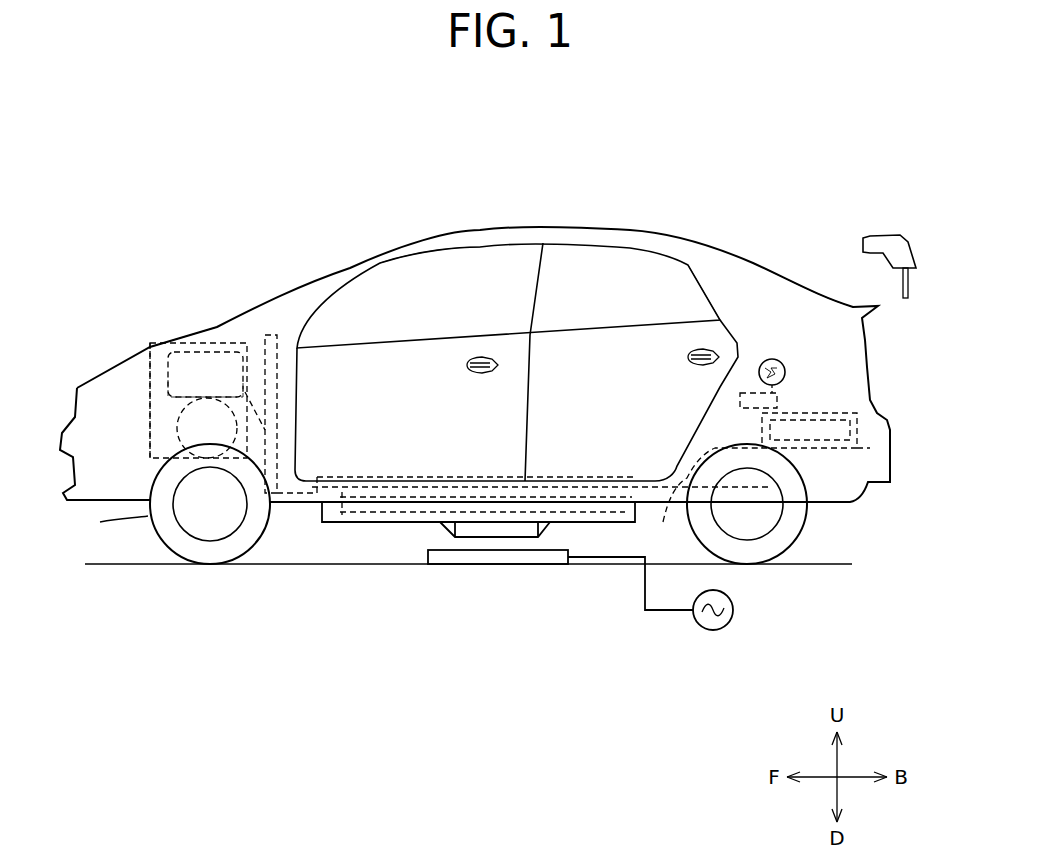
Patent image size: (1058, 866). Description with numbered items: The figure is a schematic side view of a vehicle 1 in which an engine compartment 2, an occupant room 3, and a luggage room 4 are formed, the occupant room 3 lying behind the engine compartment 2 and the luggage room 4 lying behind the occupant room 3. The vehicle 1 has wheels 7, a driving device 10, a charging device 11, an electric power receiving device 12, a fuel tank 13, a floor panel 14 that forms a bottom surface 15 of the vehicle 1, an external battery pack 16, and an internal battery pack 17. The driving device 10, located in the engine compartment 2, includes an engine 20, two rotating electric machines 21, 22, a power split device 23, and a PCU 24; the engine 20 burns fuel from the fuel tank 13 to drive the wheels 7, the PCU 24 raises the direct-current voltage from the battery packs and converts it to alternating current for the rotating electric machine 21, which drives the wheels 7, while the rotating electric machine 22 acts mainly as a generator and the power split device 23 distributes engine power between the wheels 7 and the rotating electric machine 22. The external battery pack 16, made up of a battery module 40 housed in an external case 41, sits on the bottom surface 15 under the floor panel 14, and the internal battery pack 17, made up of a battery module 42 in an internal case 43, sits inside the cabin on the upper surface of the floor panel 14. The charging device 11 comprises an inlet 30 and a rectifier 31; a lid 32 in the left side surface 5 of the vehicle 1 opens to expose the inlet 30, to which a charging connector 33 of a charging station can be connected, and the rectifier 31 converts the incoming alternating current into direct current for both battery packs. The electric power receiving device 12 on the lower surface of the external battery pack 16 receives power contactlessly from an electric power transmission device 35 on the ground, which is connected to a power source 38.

The vehicle 1 is at (581, 195).
The engine compartment 2 is at (241, 322).
The occupant room 3 is at (431, 278).
The luggage room 4 is at (766, 280).
The left side surface 5 is at (723, 290).
The wheels 7 is at (115, 522).
The driving device 10 is at (238, 445).
The charging device 11 is at (845, 365).
The electric power receiving device 12 is at (463, 527).
The fuel tank 13 is at (660, 485).
The floor panel 14 is at (583, 497).
The bottom surface 15 is at (615, 500).
The external battery pack 16 is at (478, 582).
The internal battery pack 17 is at (775, 529).
The engine 20 is at (152, 450).
The rotating electric machine 21 is at (232, 420).
The rotating electric machine 22 is at (207, 428).
The power split device 23 is at (205, 388).
The PCU 24 is at (286, 485).
The inlet 30 is at (792, 381).
The rectifier 31 is at (778, 408).
The lid 32 is at (782, 362).
The charging connector 33 is at (892, 243).
The electric power transmission device 35 is at (517, 553).
The power source 38 is at (736, 611).
The battery module 40 is at (350, 513).
The external case 41 is at (385, 522).
The battery module 42 is at (820, 448).
The internal case 43 is at (865, 448).